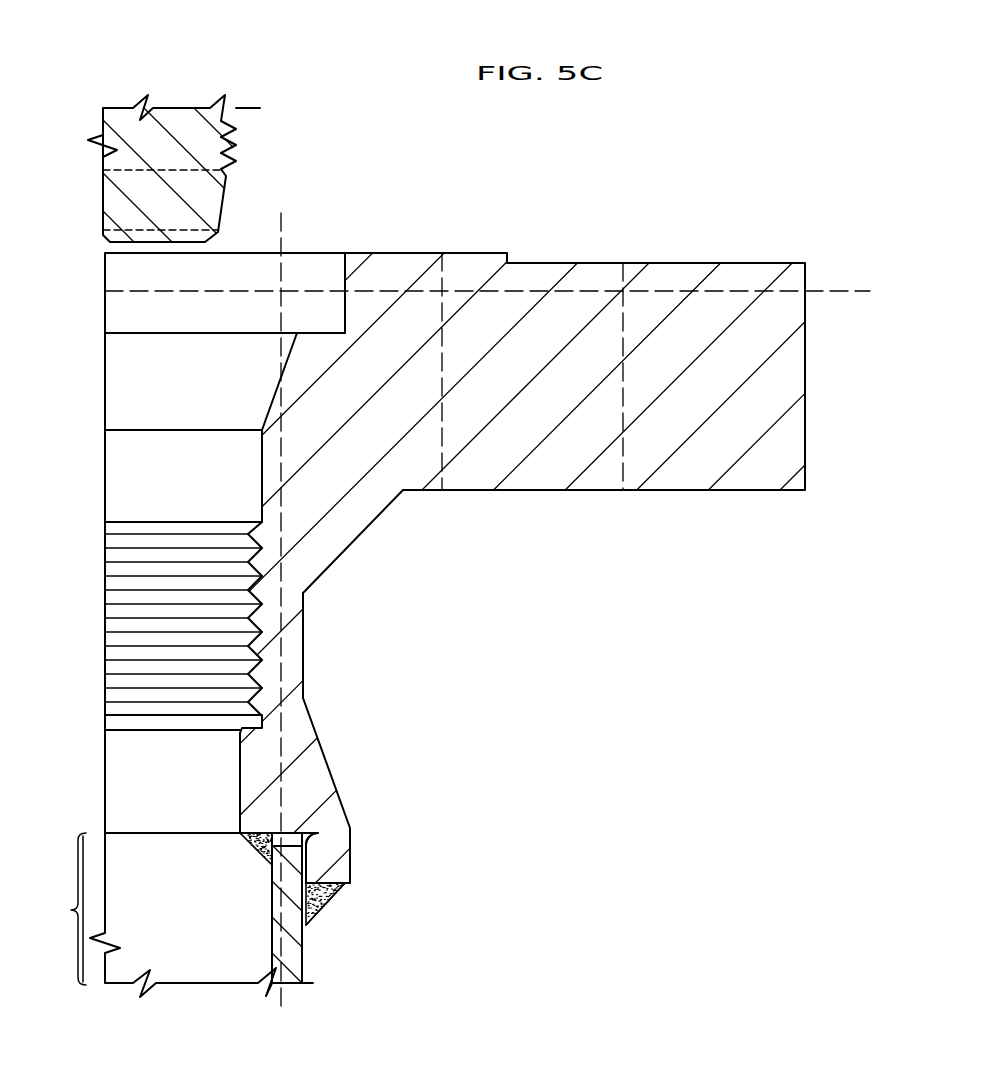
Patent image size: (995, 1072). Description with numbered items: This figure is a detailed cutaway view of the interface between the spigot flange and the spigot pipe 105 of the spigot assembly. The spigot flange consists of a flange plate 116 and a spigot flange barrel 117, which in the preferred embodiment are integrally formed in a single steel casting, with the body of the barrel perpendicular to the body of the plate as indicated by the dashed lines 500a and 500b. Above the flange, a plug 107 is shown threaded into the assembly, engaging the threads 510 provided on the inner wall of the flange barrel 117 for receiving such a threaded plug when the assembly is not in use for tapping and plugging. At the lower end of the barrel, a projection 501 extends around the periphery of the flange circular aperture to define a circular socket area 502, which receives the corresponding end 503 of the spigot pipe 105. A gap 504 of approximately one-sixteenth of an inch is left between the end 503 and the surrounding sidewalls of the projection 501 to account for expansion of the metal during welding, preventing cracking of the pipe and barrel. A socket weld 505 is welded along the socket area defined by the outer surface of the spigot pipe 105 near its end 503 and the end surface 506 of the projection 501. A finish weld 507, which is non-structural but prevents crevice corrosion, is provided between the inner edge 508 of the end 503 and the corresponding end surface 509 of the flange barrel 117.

The plug 107 is at (219, 197).
The dashed line 500a is at (286, 233).
The dashed line 500b is at (835, 291).
The flange plate 116 is at (740, 492).
The threads 510 is at (258, 589).
The spigot flange barrel 117 is at (303, 650).
The gap 504 is at (272, 830).
The end surface 509 is at (243, 837).
The end 503 is at (303, 838).
The finish weld 507 is at (250, 840).
The projection 501 is at (352, 864).
The end surface 506 is at (347, 883).
The socket weld 505 is at (325, 912).
The inner edge 508 is at (270, 878).
The spigot pipe 105 is at (272, 934).
The circular socket area 502 is at (71, 910).